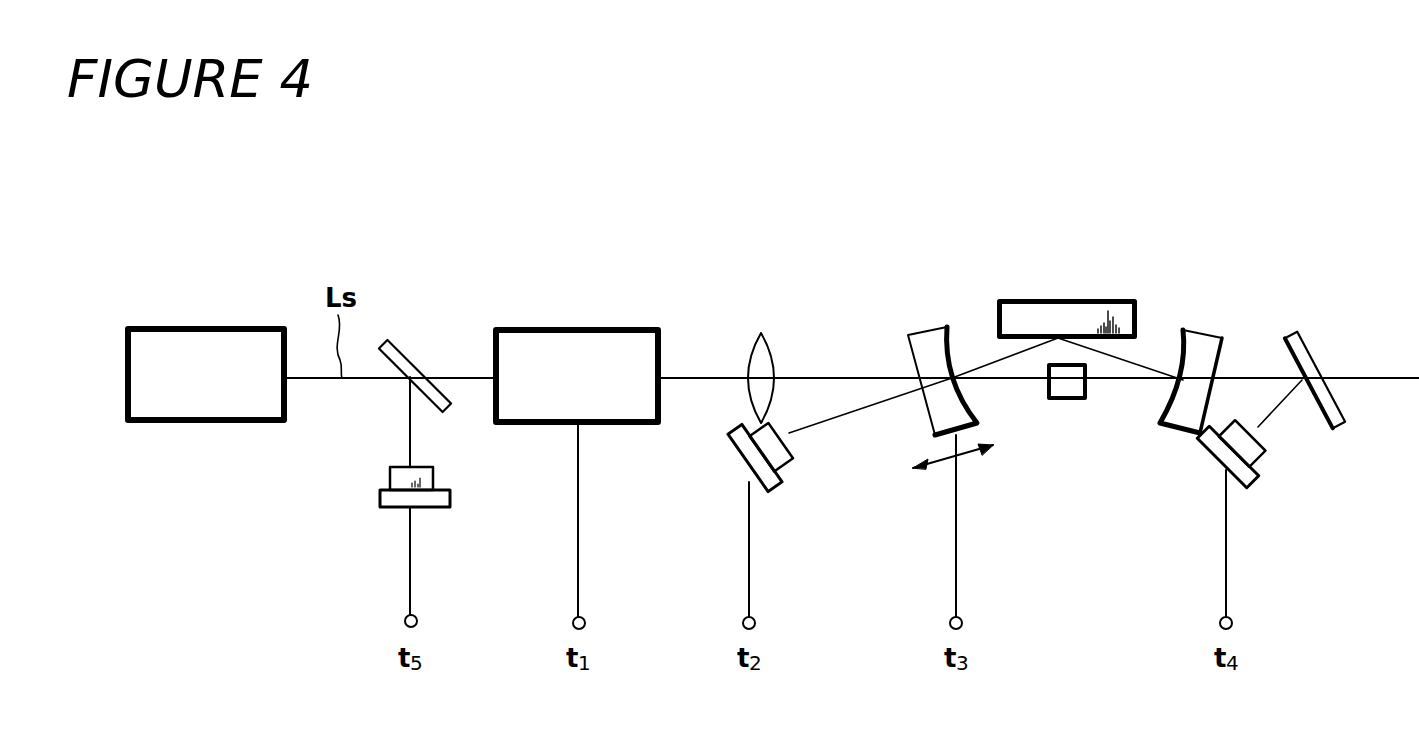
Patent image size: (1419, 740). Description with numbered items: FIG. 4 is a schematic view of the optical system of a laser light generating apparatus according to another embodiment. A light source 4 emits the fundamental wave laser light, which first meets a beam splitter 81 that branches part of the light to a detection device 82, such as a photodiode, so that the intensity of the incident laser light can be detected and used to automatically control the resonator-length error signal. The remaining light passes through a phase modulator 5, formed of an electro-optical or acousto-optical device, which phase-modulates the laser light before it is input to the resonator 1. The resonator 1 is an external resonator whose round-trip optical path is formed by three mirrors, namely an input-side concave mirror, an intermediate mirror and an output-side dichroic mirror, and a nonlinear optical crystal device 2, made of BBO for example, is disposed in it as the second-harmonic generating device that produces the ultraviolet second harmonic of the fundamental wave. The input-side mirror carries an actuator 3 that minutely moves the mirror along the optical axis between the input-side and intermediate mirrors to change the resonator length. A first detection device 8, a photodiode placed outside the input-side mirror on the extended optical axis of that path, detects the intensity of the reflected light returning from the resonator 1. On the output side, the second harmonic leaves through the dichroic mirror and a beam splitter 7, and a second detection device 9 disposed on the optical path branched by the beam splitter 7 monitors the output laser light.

The resonator 1 is at (1062, 306).
The nonlinear optical crystal device 2 is at (1065, 397).
The actuator 3 is at (967, 455).
The light source 4 is at (212, 326).
The phase modulator 5 is at (557, 327).
The beam splitter 7 is at (1288, 342).
The first detection device 8 is at (763, 480).
The second detection device 9 is at (1250, 473).
The beam splitter 81 is at (403, 347).
The detection device 82 is at (380, 492).